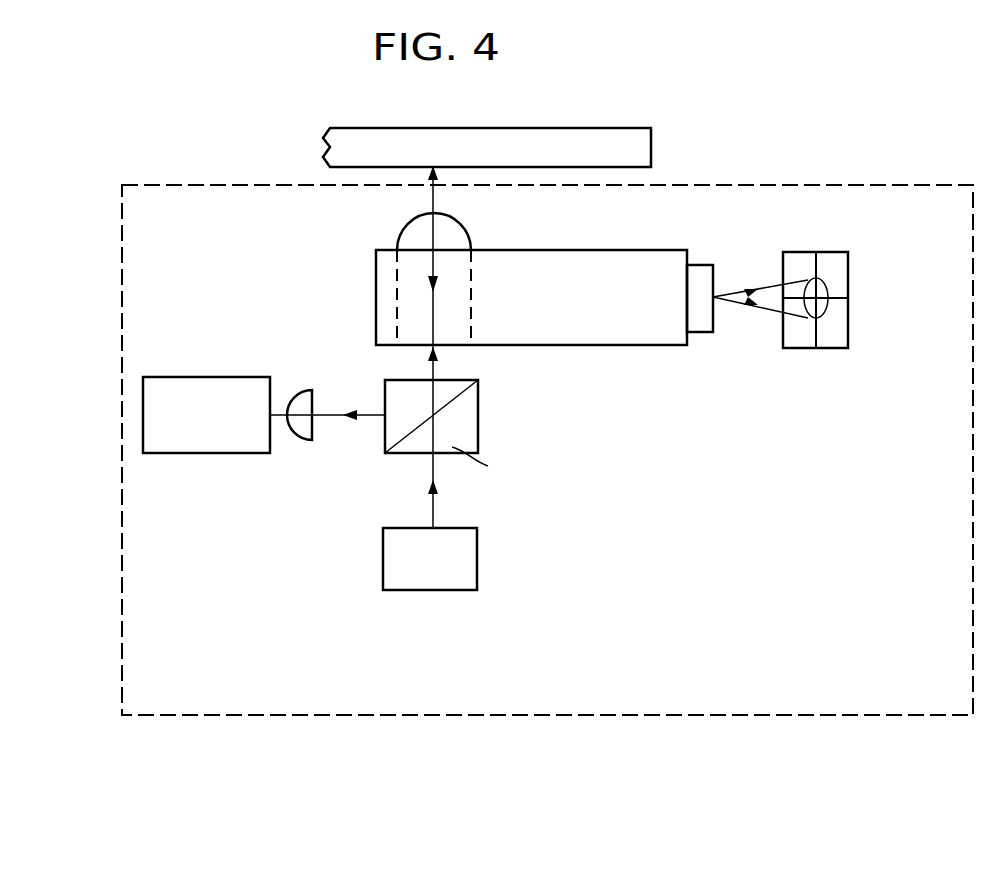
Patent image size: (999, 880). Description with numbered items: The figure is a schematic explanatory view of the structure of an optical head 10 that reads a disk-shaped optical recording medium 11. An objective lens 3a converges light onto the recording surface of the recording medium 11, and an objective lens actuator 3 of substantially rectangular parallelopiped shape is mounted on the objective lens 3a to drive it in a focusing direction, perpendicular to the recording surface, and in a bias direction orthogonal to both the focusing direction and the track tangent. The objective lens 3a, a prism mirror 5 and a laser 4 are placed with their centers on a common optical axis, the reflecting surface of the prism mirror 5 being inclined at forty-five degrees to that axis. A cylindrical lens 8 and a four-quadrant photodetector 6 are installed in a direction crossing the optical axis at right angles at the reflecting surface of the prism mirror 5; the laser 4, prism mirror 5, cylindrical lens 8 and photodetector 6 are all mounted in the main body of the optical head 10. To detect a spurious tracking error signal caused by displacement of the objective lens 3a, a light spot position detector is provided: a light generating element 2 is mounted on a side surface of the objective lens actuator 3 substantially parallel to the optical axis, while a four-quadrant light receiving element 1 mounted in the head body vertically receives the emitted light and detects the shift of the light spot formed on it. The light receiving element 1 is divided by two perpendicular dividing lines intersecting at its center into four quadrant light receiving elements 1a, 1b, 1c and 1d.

The four-quadrant light receiving element 1 is at (864, 336).
The quadrant light receiving element 1a is at (802, 262).
The quadrant light receiving element 1b is at (830, 262).
The quadrant light receiving element 1c is at (832, 341).
The quadrant light receiving element 1d is at (800, 341).
The light generating element 2 is at (702, 334).
The objective lens actuator 3 is at (555, 260).
The objective lens 3a is at (414, 238).
The laser 4 is at (413, 578).
The prism mirror 5 is at (390, 430).
The four-quadrant photodetector 6 is at (192, 440).
The cylindrical lens 8 is at (302, 428).
The optical head 10 is at (258, 712).
The optical recording medium 11 is at (574, 142).